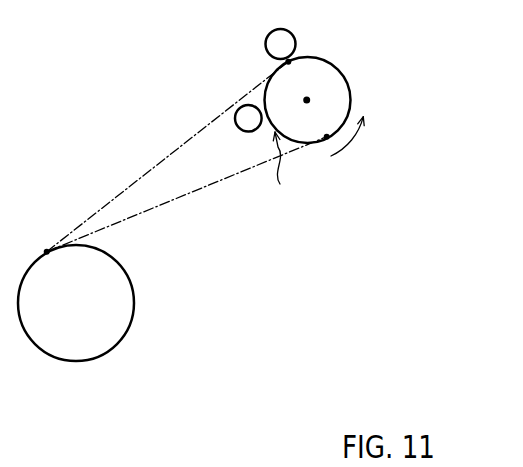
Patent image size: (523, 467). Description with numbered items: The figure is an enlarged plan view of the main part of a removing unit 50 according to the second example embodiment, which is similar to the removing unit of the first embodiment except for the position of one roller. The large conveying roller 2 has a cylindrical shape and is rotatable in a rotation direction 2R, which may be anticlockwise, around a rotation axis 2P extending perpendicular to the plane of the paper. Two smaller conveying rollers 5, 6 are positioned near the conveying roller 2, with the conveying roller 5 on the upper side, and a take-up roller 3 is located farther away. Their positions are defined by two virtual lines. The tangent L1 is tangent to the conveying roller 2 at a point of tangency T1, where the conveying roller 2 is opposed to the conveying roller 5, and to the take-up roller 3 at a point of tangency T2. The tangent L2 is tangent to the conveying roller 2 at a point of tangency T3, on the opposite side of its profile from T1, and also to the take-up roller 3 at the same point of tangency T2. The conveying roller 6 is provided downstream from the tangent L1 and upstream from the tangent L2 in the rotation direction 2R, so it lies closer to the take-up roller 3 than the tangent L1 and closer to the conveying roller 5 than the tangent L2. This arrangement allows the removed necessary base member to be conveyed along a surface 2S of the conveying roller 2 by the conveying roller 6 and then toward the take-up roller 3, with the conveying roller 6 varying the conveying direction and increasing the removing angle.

The removing unit 50 is at (432, 62).
The conveying roller 2 is at (325, 77).
The rotation axis 2P is at (323, 110).
The rotation direction 2R is at (346, 146).
The surface of the conveying roller 2S is at (281, 175).
The take-up roller 3 is at (78, 340).
The conveying roller 5 is at (277, 43).
The conveying roller 6 is at (247, 117).
The point of tangency T1 is at (288, 62).
The point of tangency T2 is at (47, 252).
The point of tangency T3 is at (327, 140).
The tangent L1 is at (137, 183).
The tangent L2 is at (202, 188).